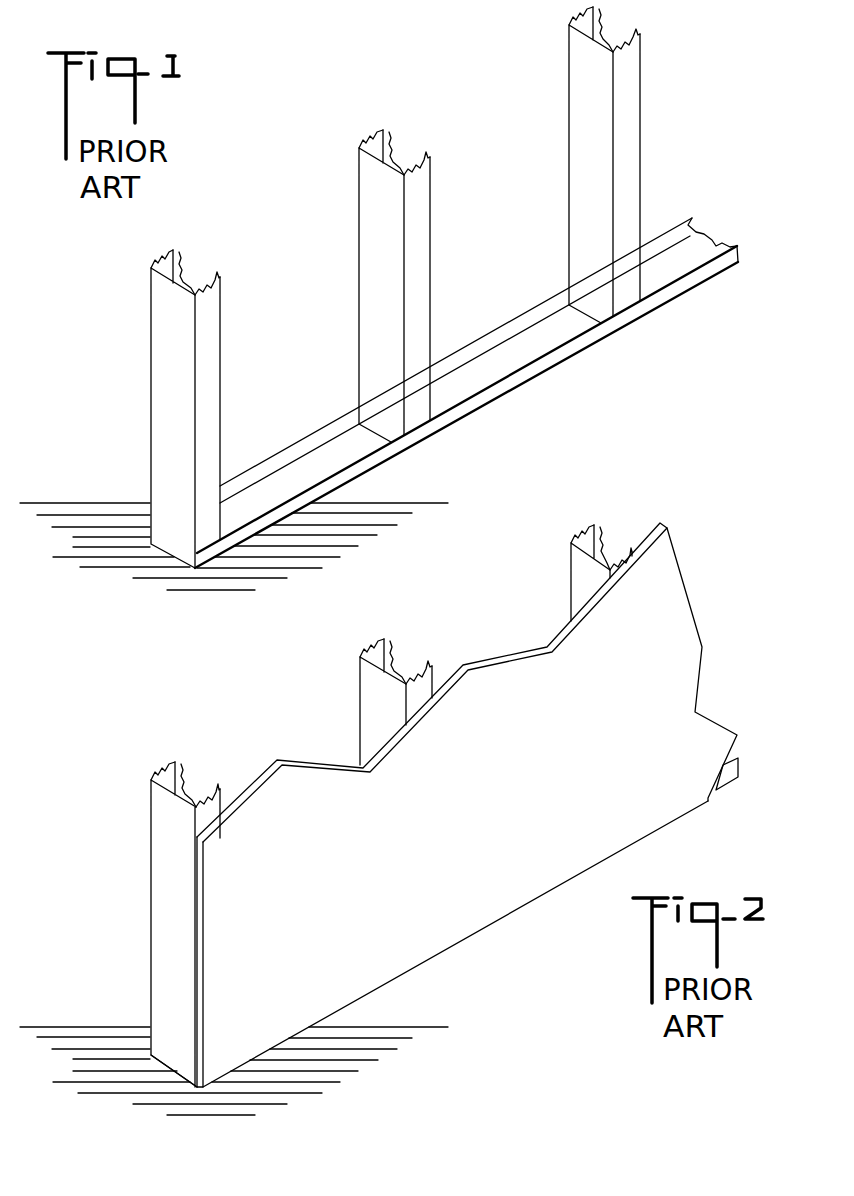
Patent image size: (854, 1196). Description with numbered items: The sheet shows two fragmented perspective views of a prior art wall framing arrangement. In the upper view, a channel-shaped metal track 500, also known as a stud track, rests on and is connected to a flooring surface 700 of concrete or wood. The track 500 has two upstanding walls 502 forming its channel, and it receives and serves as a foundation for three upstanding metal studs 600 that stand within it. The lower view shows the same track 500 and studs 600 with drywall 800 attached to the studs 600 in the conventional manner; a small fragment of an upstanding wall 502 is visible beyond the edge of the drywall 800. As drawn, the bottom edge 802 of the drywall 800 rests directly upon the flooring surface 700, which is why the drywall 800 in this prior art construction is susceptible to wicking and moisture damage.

In FIG. 1, the track 500 is at (467, 357).
In FIG. 2, the track 500 is at (157, 1067).
In FIG. 1, the upstanding walls 502 is at (482, 347).
In FIG. 2, the upstanding walls 502 is at (726, 775).
In FIG. 1, the studs 600 is at (370, 233).
In FIG. 2, the studs 600 is at (588, 578).
In FIG. 1, the flooring surface 700 is at (128, 572).
In FIG. 2, the flooring surface 700 is at (325, 1087).
In FIG. 2, the drywall 800 is at (467, 805).
In FIG. 2, the bottom edge 802 is at (490, 922).